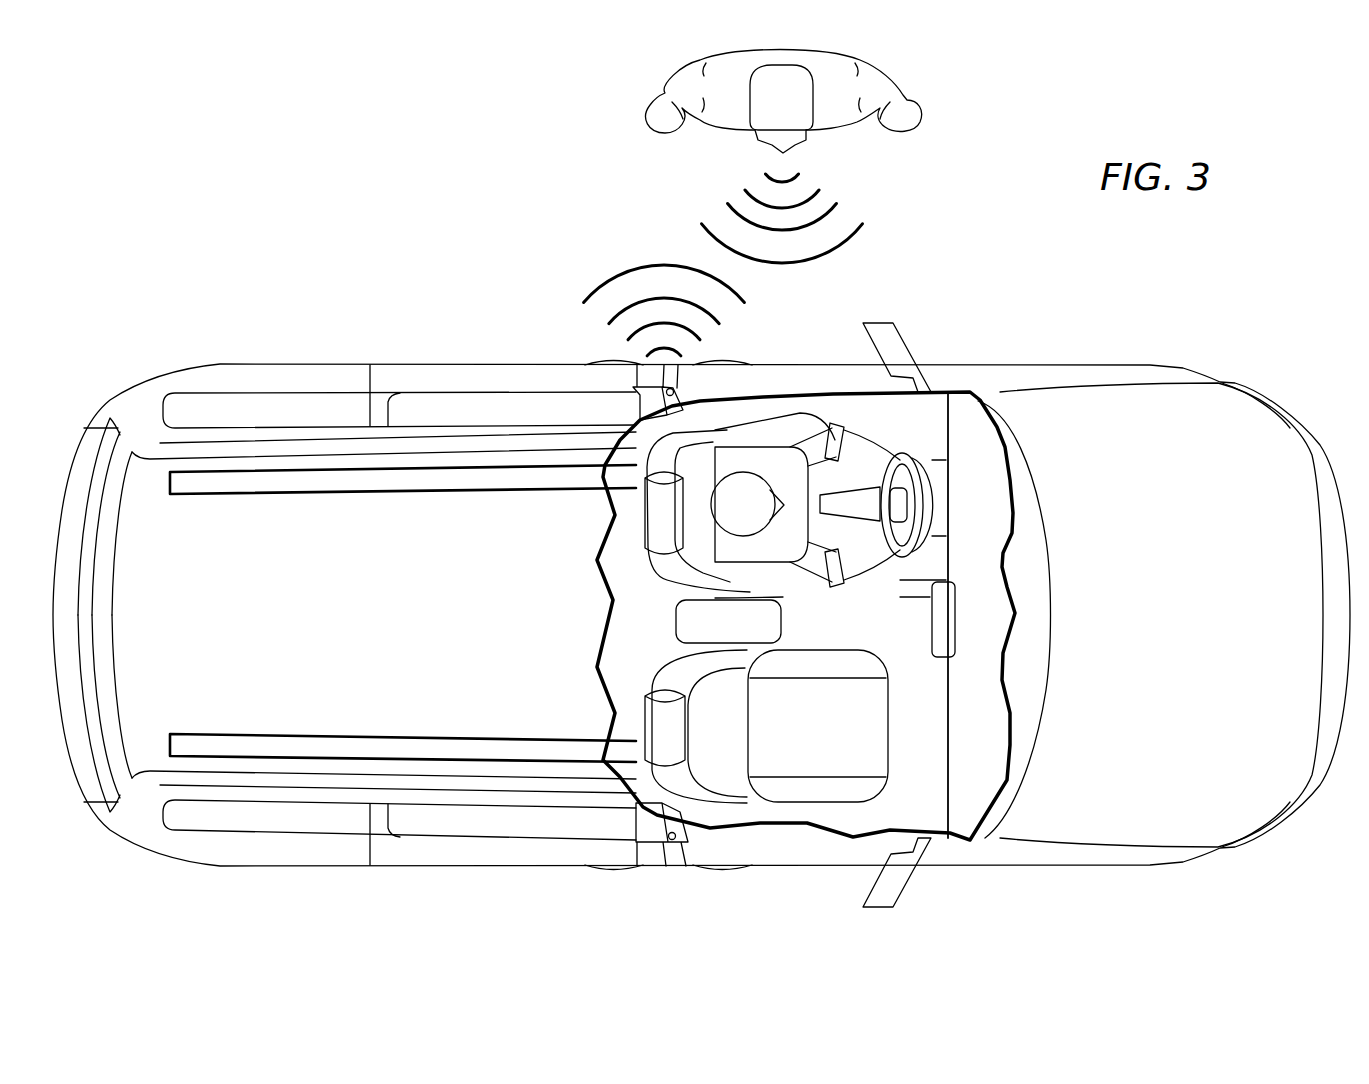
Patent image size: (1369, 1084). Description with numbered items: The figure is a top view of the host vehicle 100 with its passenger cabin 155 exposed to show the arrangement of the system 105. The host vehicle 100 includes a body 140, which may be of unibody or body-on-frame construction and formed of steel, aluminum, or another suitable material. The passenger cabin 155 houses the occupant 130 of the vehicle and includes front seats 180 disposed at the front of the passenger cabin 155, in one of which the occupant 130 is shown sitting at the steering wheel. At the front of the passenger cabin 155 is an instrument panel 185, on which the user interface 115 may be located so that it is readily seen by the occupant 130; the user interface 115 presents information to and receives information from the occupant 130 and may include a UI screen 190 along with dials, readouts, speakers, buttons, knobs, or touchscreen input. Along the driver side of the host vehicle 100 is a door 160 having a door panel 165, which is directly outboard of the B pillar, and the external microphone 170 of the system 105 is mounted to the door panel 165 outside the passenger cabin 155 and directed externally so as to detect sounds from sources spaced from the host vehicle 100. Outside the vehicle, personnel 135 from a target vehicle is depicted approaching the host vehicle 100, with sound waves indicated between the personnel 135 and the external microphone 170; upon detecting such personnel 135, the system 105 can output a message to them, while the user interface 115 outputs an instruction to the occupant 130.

The host vehicle 100 is at (314, 160).
The system 105 is at (954, 900).
The user interface 115 is at (956, 603).
The occupant 130 is at (806, 430).
The personnel 135 is at (918, 97).
The body 140 is at (192, 864).
The passenger cabin 155 is at (636, 617).
The door 160 is at (513, 363).
The door panel 165 is at (655, 416).
The external microphone 170 is at (674, 390).
The front seats 180 is at (646, 553).
The instrument panel 185 is at (975, 725).
The UI screen 190 is at (957, 646).